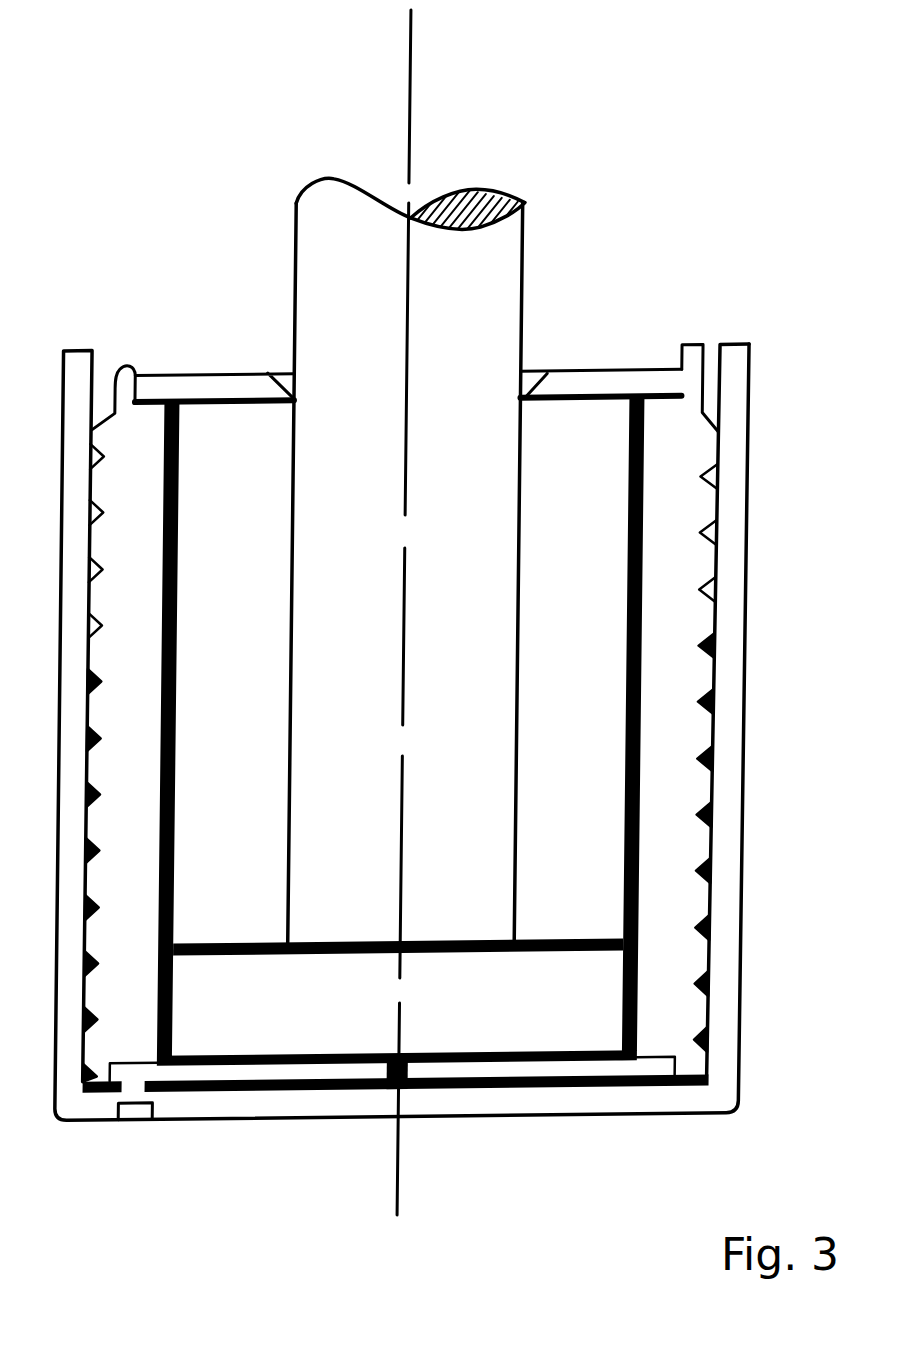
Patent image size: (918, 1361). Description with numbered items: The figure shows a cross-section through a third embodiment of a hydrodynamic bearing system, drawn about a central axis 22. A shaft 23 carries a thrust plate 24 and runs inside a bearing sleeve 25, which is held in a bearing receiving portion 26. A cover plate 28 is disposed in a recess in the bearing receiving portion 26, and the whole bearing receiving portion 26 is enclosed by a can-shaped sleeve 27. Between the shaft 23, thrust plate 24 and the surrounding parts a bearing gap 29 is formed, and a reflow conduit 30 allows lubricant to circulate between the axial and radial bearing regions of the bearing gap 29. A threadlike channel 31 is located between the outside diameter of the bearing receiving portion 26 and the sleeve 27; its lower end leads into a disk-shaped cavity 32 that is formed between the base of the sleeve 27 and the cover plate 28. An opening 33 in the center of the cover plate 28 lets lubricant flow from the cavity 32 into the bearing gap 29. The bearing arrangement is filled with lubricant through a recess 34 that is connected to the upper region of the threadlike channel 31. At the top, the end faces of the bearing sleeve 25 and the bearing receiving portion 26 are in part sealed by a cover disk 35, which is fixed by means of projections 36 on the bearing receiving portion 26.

The longitudinal axis 22 is at (403, 57).
The shaft 23 is at (508, 264).
The thrust plate 24 is at (454, 1038).
The bearing sleeve 25 is at (592, 482).
The bearing receiving portion 26 is at (688, 566).
The can-shaped sleeve 27 is at (730, 659).
The cover plate 28 is at (607, 1069).
The bearing gap 29 is at (516, 758).
The reflow conduit 30 is at (622, 841).
The threadlike channel 31 is at (697, 929).
The disk-shaped cavity 32 is at (301, 1082).
The opening 33 is at (392, 1090).
The recess 34 is at (711, 384).
The cover disk 35 is at (608, 387).
The projections 36 is at (134, 360).